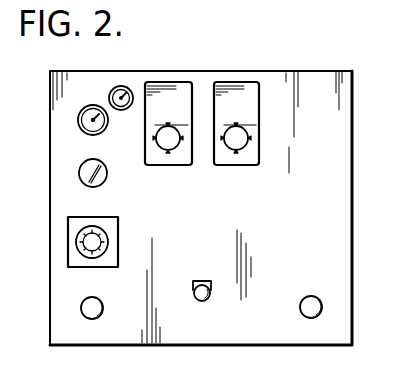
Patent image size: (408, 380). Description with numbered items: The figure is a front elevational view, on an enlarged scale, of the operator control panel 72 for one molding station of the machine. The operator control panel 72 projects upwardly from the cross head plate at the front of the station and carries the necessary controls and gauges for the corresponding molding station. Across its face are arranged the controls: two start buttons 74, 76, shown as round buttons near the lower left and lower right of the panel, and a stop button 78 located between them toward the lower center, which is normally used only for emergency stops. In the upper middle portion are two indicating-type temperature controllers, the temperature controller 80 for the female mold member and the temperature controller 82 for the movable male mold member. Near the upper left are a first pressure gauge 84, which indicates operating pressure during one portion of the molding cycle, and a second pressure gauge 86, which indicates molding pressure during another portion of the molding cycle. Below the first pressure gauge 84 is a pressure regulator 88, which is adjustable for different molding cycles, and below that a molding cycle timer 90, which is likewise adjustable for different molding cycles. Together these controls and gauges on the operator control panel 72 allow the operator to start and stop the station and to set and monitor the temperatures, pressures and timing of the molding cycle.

The operator control panel 72 is at (352, 71).
The start button 74 is at (81, 308).
The start button 76 is at (323, 311).
The stop button 78 is at (202, 281).
The indicating-type temperature controller 80 is at (237, 83).
The indicating-type temperature controller 82 is at (176, 83).
The first pressure gauge 84 is at (78, 118).
The second pressure gauge 86 is at (125, 86).
The pressure regulator 88 is at (80, 170).
The molding cycle timer 90 is at (70, 240).